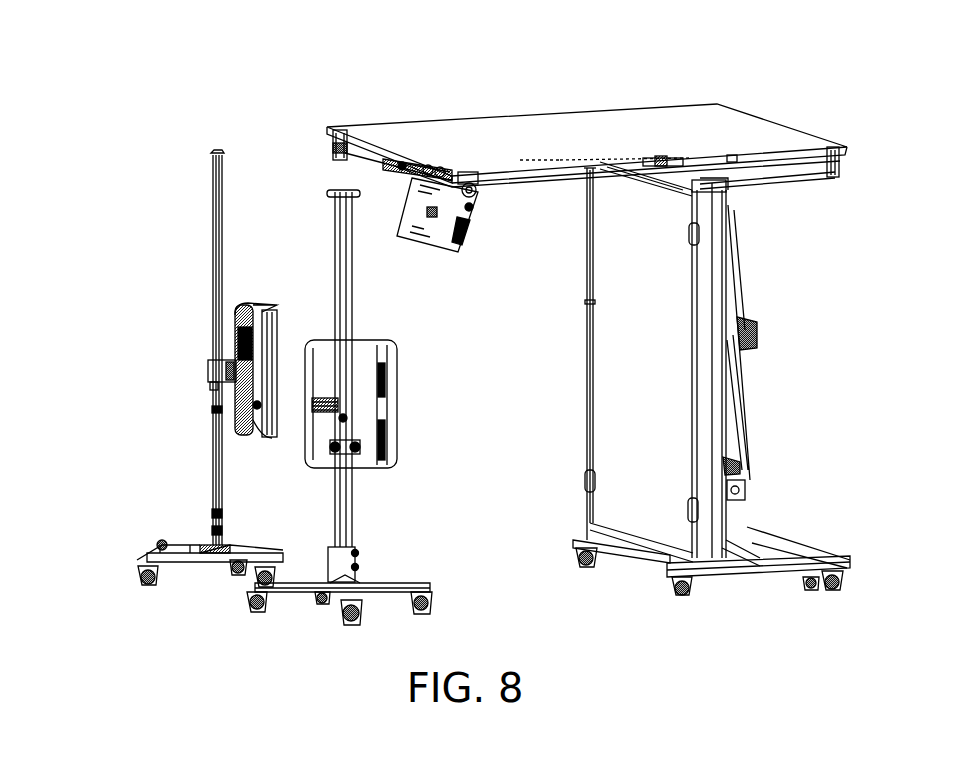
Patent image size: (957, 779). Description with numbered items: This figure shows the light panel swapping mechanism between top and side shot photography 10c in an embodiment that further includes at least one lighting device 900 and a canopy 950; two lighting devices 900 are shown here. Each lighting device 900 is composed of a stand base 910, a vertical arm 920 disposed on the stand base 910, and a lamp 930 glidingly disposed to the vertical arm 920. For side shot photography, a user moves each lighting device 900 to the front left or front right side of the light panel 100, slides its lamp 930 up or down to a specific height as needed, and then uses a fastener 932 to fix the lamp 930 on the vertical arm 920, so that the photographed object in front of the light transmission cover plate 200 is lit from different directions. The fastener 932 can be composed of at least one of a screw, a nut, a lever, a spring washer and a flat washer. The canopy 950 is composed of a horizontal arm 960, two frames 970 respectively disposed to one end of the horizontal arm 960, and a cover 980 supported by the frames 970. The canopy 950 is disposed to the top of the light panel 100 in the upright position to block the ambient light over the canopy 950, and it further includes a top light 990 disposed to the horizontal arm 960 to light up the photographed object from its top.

The light panel swapping mechanism between top and side shot photography 10c is at (759, 637).
The light panel 100 is at (652, 552).
The light transmission cover plate 200 is at (610, 430).
The canopy 950 is at (530, 78).
The horizontal arm 960 is at (448, 168).
The frames 970 is at (383, 160).
The cover 980 is at (514, 118).
The top light 990 is at (403, 220).
The lighting device 900 is at (122, 455).
The stand base 910 is at (185, 545).
The vertical arm 920 is at (214, 476).
The lamp 930 is at (236, 430).
The fastener 932 is at (211, 381).